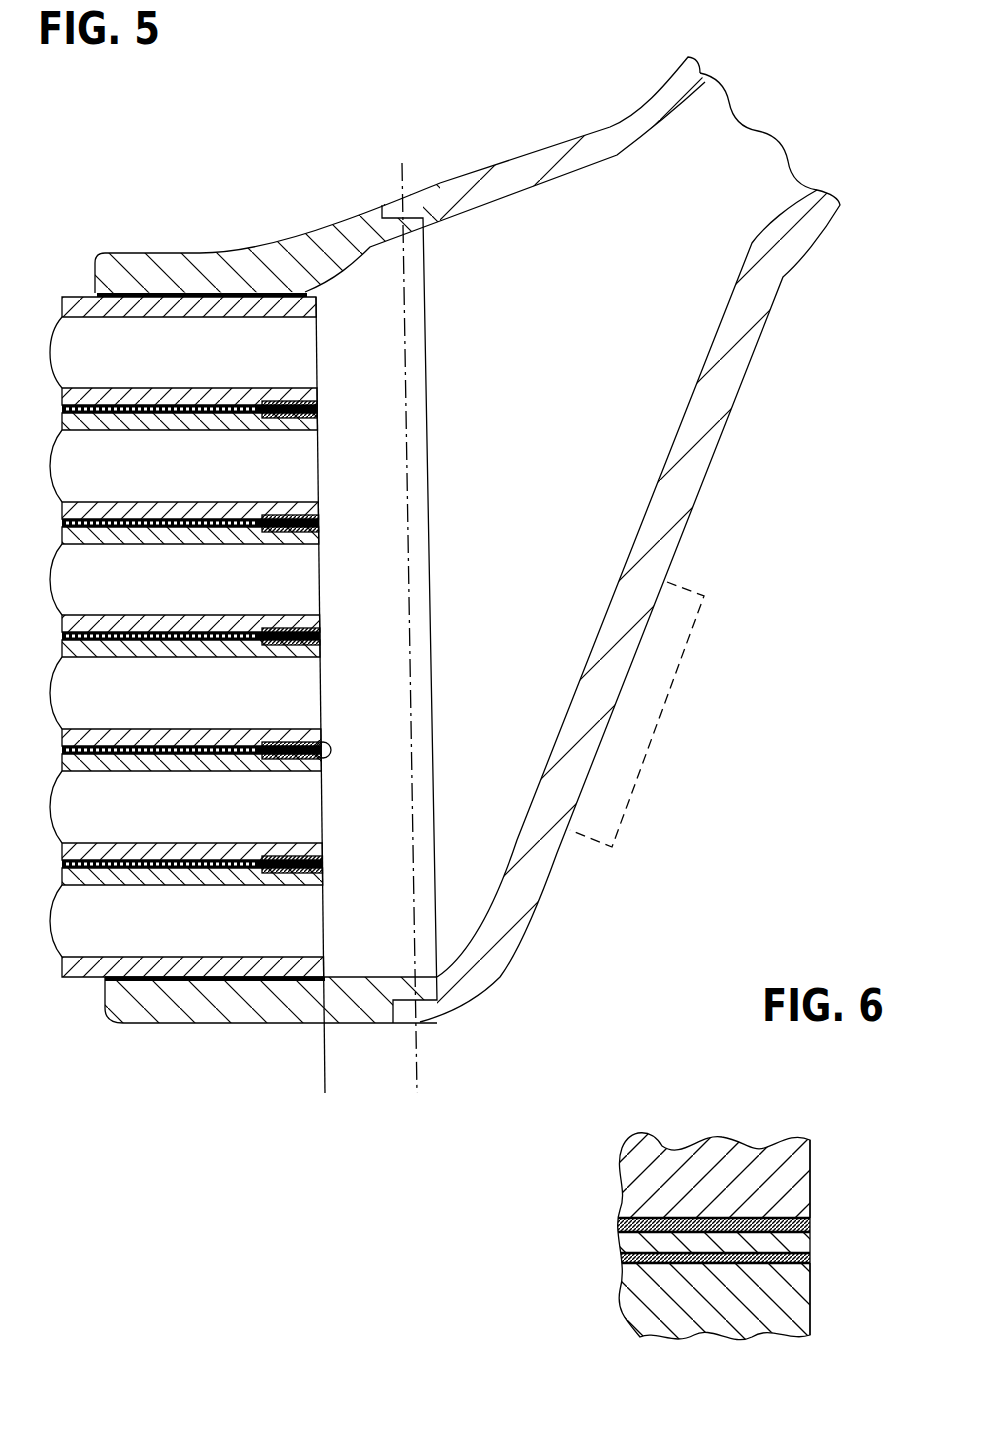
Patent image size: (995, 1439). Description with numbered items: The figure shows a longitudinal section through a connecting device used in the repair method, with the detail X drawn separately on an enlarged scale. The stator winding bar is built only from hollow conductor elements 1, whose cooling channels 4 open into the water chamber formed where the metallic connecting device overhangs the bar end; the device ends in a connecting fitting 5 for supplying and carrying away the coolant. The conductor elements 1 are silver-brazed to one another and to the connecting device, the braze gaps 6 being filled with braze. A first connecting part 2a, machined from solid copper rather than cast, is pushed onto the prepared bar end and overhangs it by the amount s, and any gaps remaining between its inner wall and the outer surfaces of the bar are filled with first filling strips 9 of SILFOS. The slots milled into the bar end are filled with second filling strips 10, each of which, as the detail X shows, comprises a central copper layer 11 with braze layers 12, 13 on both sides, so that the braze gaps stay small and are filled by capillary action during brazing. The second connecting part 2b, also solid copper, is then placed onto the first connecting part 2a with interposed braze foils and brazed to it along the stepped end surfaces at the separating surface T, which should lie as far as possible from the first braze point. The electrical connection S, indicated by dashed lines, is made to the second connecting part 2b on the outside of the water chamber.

In FIG. 5, the hollow conductor element 1 is at (232, 397).
In FIG. 6, the hollow conductor element 1 is at (658, 1173).
In FIG. 5, the first connecting part 2a is at (135, 275).
In FIG. 5, the second connecting part 2b is at (700, 418).
In FIG. 5, the cooling channel 4 is at (177, 367).
In FIG. 5, the connecting fitting 5 is at (672, 88).
In FIG. 5, the braze gap 6 is at (248, 292).
In FIG. 5, the first filling strip 9 is at (211, 637).
In FIG. 6, the second filling strip 10 is at (810, 1257).
In FIG. 6, the central copper layer 11 is at (658, 1243).
In FIG. 6, the braze layer 12 is at (797, 1173).
In FIG. 6, the braze layer 13 is at (797, 1308).
In FIG. 5, the separating surface T is at (409, 573).
In FIG. 5, the electrical connection S is at (627, 740).
In FIG. 5, the detail X is at (331, 748).
In FIG. 6, the detail X is at (597, 1114).